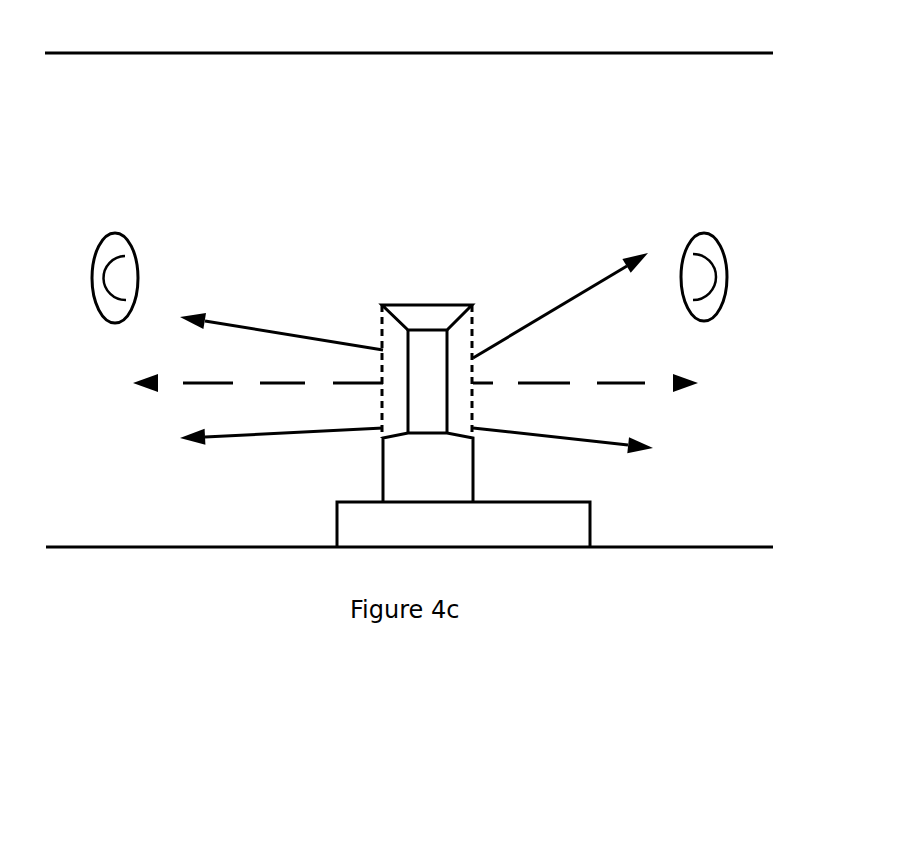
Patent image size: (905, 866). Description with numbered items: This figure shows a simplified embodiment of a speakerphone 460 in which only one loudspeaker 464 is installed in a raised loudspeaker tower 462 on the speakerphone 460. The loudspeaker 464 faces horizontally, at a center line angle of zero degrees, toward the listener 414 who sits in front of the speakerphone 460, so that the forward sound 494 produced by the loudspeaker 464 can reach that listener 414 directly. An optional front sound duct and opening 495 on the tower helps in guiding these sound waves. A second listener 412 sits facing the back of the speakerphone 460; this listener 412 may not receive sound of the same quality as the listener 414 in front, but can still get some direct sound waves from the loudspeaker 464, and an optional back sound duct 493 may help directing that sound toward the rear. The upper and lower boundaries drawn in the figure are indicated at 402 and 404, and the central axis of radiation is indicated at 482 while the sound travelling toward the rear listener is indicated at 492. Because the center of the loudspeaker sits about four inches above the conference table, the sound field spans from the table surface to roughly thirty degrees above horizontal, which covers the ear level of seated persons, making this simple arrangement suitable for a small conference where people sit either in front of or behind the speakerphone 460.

The ceiling surface 402 is at (92, 51).
The floor surface 404 is at (73, 545).
The listener 412 is at (137, 250).
The listener 414 is at (726, 262).
The speakerphone 460 is at (530, 548).
The loudspeaker tower 462 is at (393, 303).
The loudspeaker 464 is at (437, 430).
The center sound axis 482 is at (603, 383).
The left sound beams 492 is at (225, 435).
The back sound duct 493 is at (380, 328).
The forward sound 494 is at (527, 430).
The front sound duct and opening 495 is at (473, 340).